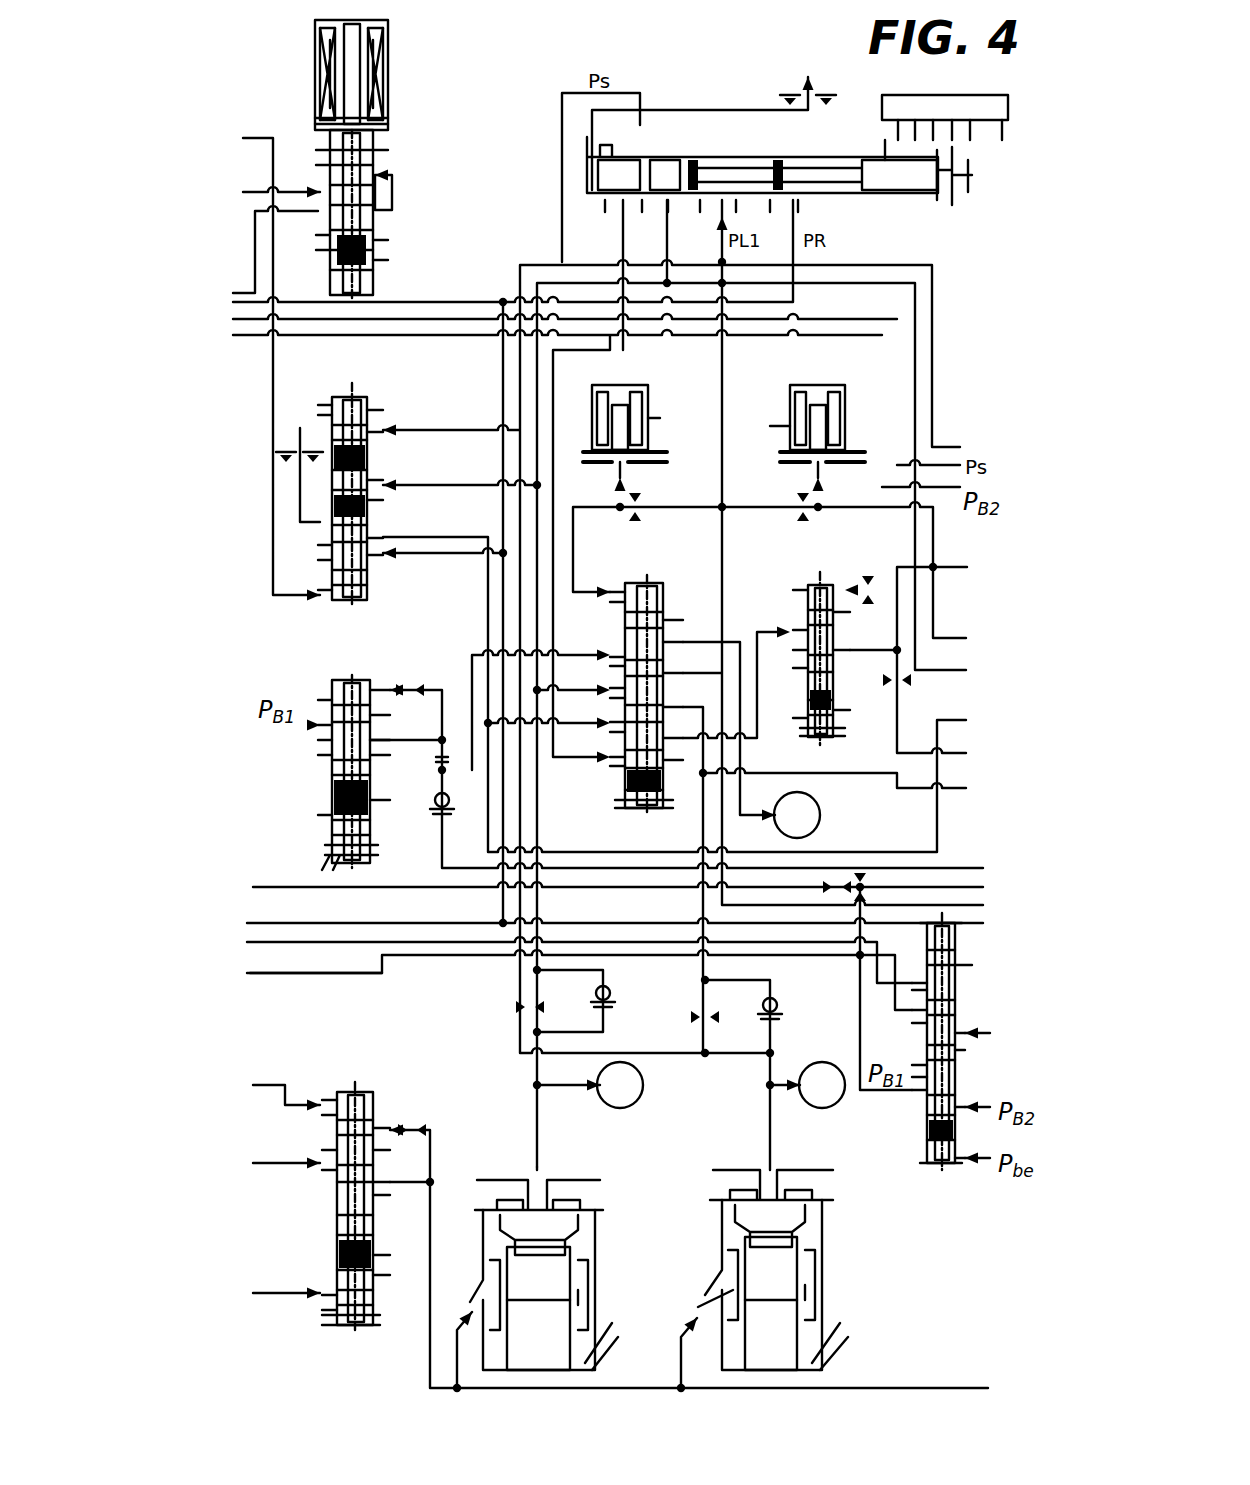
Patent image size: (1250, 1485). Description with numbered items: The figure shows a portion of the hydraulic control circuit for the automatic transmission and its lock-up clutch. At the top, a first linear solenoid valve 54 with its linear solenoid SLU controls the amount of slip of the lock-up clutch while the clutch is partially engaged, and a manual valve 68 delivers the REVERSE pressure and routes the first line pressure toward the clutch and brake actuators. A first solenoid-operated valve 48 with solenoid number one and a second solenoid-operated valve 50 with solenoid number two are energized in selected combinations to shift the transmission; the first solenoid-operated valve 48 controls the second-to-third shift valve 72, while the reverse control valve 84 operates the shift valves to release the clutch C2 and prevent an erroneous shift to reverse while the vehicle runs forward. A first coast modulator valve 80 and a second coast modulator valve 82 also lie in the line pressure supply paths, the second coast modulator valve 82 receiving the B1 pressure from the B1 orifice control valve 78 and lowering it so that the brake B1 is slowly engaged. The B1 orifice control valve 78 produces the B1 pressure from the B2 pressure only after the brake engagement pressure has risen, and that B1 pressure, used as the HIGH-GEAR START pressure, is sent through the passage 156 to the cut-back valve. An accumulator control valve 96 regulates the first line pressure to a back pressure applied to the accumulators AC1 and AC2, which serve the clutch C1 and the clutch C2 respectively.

The first linear solenoid valve 54 is at (398, 145).
The linear solenoid SL.U SLU is at (386, 68).
The manual valve 68 is at (845, 210).
The reverse control valve 84 is at (392, 388).
The first solenoid-operated valve 48 is at (656, 392).
The second solenoid-operated valve 50 is at (770, 394).
The 2-3 shift valve 72 is at (642, 575).
The first coast modulator valve 80 is at (824, 570).
The second coast modulator valve 82 is at (350, 672).
The accumulator control valve 96 is at (358, 1078).
The B1 orifice control valve 78 is at (917, 1185).
The passage 156 is at (272, 975).
The brake B1 is at (820, 815).
The clutch C1 is at (637, 1100).
The clutch C2 is at (820, 1108).
The accumulator AC1 is at (630, 1290).
The accumulator AC2 is at (855, 1300).